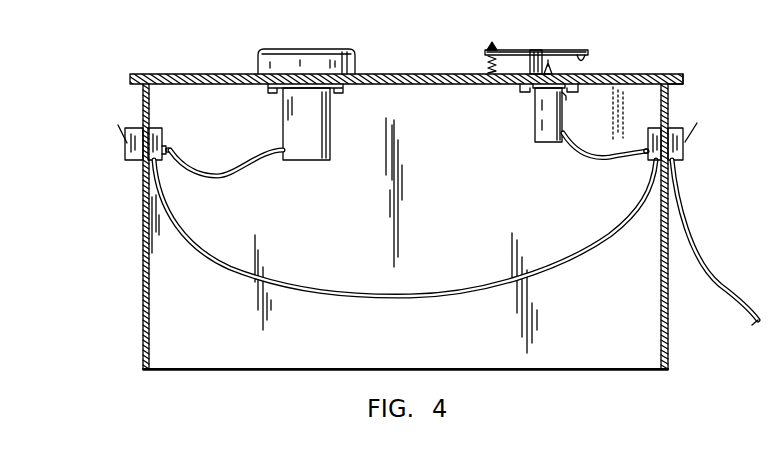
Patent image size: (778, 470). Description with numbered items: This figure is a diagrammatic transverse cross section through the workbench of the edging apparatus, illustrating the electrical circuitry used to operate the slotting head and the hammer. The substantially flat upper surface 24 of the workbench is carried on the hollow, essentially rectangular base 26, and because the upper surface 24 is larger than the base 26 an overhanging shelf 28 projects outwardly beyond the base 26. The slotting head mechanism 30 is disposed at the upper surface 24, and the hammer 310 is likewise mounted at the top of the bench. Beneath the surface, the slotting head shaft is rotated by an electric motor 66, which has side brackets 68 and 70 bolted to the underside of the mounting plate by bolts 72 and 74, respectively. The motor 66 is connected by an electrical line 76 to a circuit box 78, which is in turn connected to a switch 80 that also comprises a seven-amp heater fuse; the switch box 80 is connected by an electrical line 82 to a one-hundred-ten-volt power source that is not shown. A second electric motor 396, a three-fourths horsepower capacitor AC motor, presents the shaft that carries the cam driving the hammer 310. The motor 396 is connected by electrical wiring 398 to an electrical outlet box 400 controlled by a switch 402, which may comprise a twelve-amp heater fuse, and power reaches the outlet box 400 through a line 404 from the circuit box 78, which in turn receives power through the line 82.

The upper surface 24 is at (628, 80).
The base 26 is at (668, 353).
The overhanging shelf 28 is at (676, 87).
The slotting head mechanism 30 is at (563, 42).
The hammer 310 is at (340, 44).
The electric motor 396 is at (322, 162).
The electrical wiring 398 is at (234, 173).
The electrical outlet box 400 is at (160, 144).
The switch 402 is at (127, 150).
The line 404 is at (433, 296).
The electric motor 66 is at (537, 132).
The side bracket 68 is at (537, 99).
The side bracket 70 is at (566, 100).
The bolt 72 is at (524, 91).
The bolt 74 is at (572, 91).
The electrical line 76 is at (602, 157).
The circuit box 78 is at (650, 128).
The switch 80 is at (686, 154).
The electrical line 82 is at (716, 279).